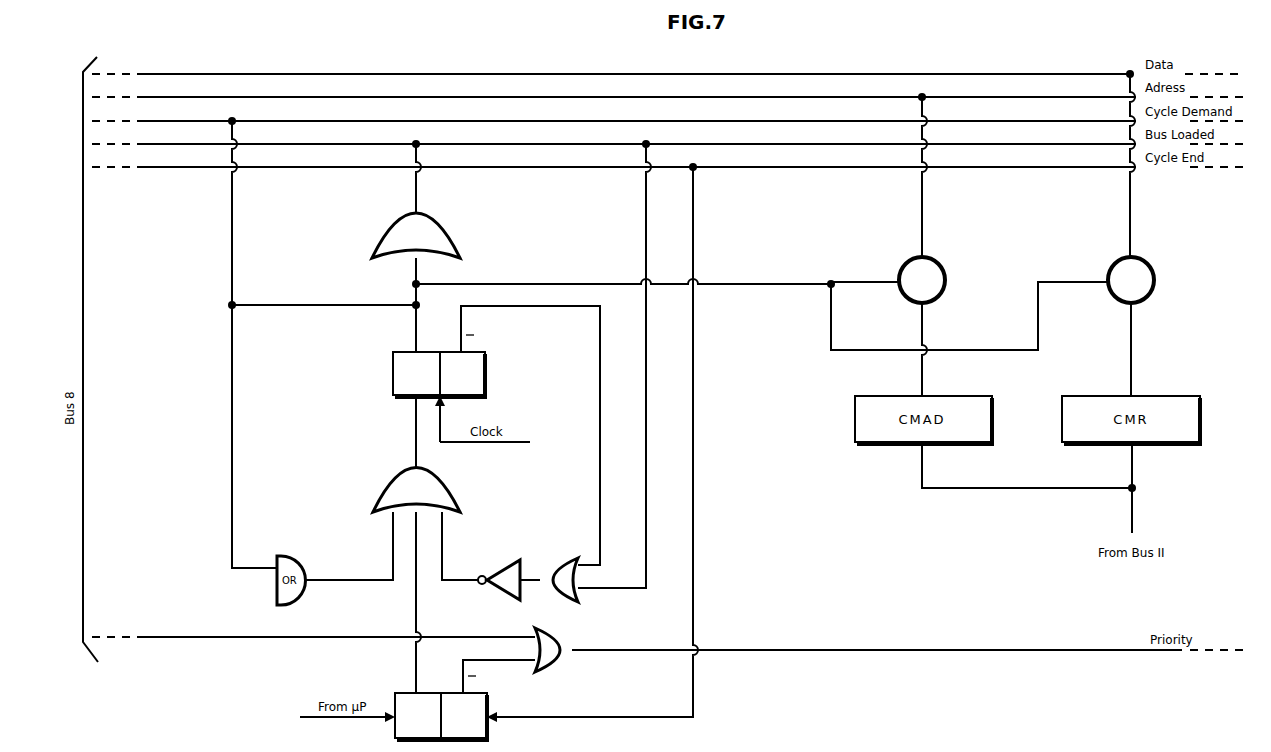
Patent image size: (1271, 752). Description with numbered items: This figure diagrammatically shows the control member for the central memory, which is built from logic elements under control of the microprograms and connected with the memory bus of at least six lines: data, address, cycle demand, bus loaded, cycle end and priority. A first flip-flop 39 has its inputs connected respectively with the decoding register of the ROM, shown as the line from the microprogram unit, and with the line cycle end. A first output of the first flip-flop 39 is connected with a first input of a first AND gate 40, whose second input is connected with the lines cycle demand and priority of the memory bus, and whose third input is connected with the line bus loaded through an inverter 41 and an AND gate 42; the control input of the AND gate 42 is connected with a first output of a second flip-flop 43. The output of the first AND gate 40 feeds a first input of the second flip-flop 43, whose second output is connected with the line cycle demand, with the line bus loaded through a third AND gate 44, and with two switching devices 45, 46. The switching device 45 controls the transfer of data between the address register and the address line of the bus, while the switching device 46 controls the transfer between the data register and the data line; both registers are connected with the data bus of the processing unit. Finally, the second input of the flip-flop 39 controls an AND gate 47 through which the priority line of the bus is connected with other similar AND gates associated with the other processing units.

The first flip-flop 39 is at (489, 735).
The first AND gate 40 is at (395, 478).
The inverter 41 is at (498, 570).
The AND gate 42 is at (556, 558).
The second flip-flop 43 is at (487, 380).
The third AND gate 44 is at (452, 238).
The switching device 45 is at (940, 270).
The switching device 46 is at (1150, 270).
The AND gate 47 is at (556, 667).